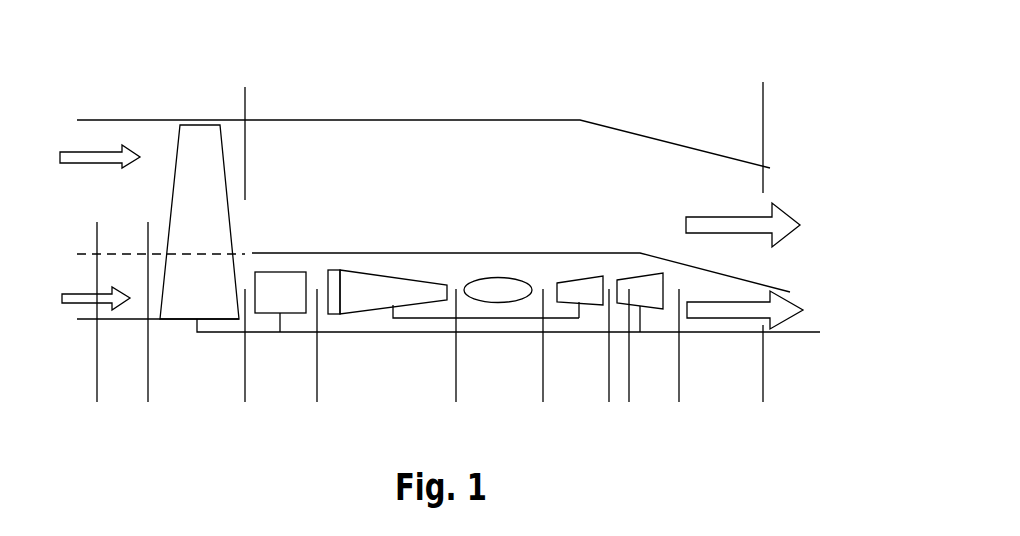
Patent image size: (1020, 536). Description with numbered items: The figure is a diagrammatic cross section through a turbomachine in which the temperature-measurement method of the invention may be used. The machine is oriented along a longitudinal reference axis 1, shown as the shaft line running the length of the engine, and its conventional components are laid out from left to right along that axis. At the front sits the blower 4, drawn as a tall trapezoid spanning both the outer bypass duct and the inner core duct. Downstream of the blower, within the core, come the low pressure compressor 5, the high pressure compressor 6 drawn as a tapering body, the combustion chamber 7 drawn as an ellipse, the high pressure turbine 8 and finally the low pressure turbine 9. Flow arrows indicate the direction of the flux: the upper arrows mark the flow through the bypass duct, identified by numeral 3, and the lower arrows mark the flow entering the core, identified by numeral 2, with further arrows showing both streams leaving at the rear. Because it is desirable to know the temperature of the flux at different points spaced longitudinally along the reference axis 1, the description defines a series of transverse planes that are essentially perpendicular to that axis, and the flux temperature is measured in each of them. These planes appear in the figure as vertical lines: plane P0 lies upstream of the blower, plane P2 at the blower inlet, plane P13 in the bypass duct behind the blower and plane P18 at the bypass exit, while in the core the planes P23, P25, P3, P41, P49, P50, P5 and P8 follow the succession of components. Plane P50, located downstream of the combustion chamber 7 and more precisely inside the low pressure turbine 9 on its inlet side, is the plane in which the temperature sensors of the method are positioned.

The reference axis 1 is at (805, 331).
The core air flow 2 is at (120, 270).
The bypass air flow 3 is at (107, 180).
The blower 4 is at (185, 197).
The low pressure compressor 5 is at (267, 305).
The high pressure compressor 6 is at (363, 298).
The combustion chamber 7 is at (500, 291).
The high pressure turbine 8 is at (593, 297).
The low pressure turbine 9 is at (652, 300).
The transverse plane P0 is at (97, 375).
The transverse plane P2 is at (148, 370).
The transverse plane P13 is at (243, 100).
The transverse plane P18 is at (762, 120).
The transverse plane P23 is at (245, 373).
The transverse plane P25 is at (317, 380).
The transverse plane P3 is at (456, 360).
The transverse plane P41 is at (543, 368).
The transverse plane P49 is at (609, 377).
The transverse plane P50 is at (629, 383).
The transverse plane P5 is at (679, 373).
The transverse plane P8 is at (763, 382).